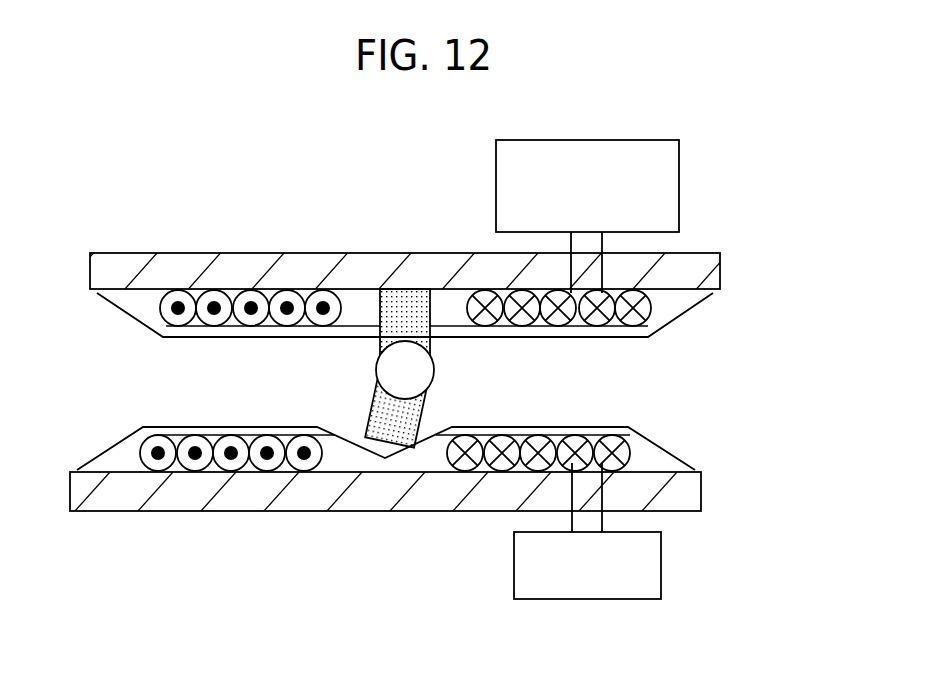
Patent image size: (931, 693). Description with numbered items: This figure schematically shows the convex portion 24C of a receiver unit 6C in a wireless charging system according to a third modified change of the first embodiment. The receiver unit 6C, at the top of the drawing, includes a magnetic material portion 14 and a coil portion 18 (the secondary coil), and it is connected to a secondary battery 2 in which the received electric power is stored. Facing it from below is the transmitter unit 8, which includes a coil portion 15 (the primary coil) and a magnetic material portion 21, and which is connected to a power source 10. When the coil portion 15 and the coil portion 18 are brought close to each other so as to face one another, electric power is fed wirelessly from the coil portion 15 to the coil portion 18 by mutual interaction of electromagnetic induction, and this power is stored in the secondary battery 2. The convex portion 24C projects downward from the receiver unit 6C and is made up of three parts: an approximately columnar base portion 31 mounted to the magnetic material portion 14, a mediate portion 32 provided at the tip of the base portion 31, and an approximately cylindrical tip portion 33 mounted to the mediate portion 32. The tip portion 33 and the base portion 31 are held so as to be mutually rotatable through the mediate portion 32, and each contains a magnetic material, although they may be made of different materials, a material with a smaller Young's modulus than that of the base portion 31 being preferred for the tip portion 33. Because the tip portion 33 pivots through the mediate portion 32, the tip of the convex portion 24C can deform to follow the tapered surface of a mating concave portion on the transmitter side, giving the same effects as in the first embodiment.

The secondary battery 2 is at (589, 140).
The receiver unit 6C is at (426, 265).
The transmitter unit 8 is at (407, 512).
The power source 10 is at (588, 599).
The magnetic material portion 14 is at (184, 260).
The coil portion 15 is at (158, 452).
The coil portion 18 is at (178, 308).
The magnetic material portion 21 is at (237, 503).
The convex portion 24C is at (435, 328).
The base portion 31 is at (402, 298).
The mediate portion 32 is at (377, 370).
The tip portion 33 is at (378, 408).